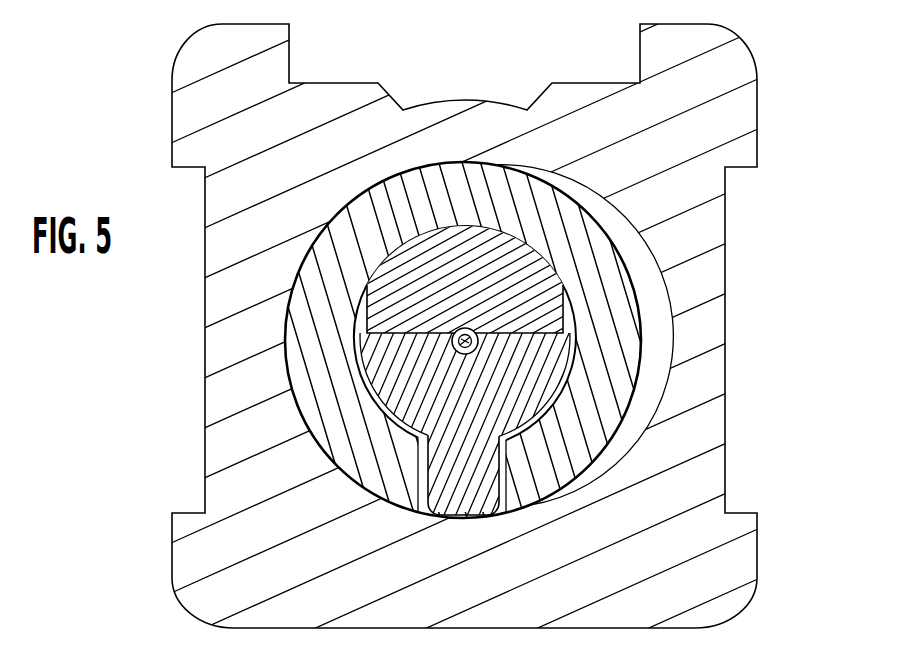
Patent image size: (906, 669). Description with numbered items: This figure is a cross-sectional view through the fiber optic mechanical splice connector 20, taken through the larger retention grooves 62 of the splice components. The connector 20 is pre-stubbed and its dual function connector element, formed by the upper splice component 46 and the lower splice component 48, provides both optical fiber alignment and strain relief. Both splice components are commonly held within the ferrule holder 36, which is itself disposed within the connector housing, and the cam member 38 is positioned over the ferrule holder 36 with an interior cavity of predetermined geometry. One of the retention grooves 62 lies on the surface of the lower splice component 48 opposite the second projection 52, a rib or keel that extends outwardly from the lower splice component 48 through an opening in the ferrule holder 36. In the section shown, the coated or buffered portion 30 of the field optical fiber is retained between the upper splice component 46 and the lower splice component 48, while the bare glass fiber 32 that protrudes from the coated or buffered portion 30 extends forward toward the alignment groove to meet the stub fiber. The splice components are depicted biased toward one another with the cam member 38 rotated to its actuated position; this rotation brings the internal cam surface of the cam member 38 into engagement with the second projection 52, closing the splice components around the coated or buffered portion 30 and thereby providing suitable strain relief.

The fiber optic mechanical splice connector 20 is at (468, 98).
The coated or buffered portion 30 is at (400, 382).
The bare glass fiber 32 is at (367, 313).
The ferrule holder 36 is at (604, 417).
The cam member 38 is at (707, 216).
The upper splice component 46 is at (520, 289).
The lower splice component 48 is at (527, 398).
The second projection 52 is at (480, 481).
The retention groove 62 is at (466, 328).